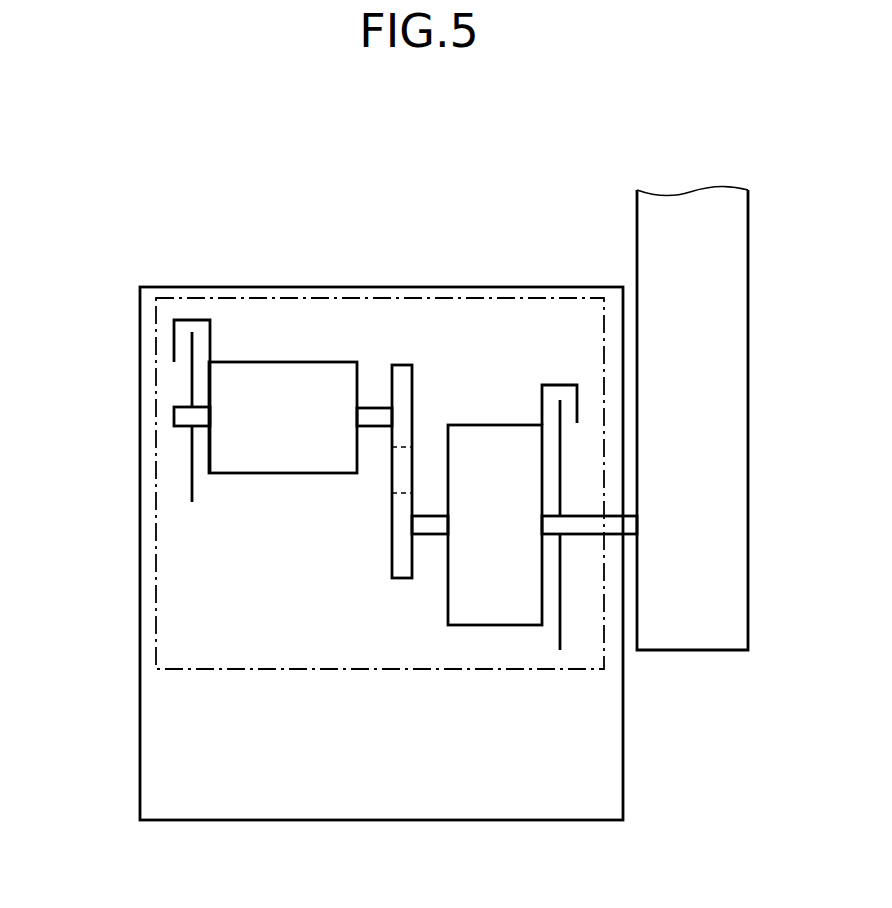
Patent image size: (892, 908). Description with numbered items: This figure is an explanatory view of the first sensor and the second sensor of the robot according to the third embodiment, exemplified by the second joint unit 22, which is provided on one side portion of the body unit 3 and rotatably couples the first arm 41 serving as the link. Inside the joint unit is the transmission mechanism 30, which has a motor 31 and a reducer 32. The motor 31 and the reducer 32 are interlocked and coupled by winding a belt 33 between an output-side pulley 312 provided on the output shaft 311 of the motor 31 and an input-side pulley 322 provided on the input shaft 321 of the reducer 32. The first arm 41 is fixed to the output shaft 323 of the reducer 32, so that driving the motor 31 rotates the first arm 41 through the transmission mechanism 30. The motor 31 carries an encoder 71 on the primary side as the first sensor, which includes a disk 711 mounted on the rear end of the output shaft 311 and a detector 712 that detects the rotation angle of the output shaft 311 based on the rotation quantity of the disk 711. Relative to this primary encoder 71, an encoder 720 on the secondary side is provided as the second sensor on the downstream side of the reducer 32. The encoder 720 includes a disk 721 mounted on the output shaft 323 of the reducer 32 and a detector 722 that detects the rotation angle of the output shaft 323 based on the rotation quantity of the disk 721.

The body unit 3 is at (178, 828).
The second joint unit 22 is at (148, 491).
The transmission mechanism 30 is at (282, 582).
The motor 31 is at (288, 362).
The output shaft 311 is at (377, 406).
The output-side pulley 312 is at (405, 452).
The reducer 32 is at (513, 627).
The input shaft 321 is at (431, 536).
The input-side pulley 322 is at (402, 492).
The output shaft 323 is at (583, 536).
The belt 33 is at (392, 538).
The first arm 41 is at (748, 412).
The encoder 71 is at (153, 325).
The disk 711 is at (190, 387).
The detector 712 is at (193, 318).
The encoder 720 is at (542, 399).
The disk 721 is at (555, 384).
The detector 722 is at (561, 452).